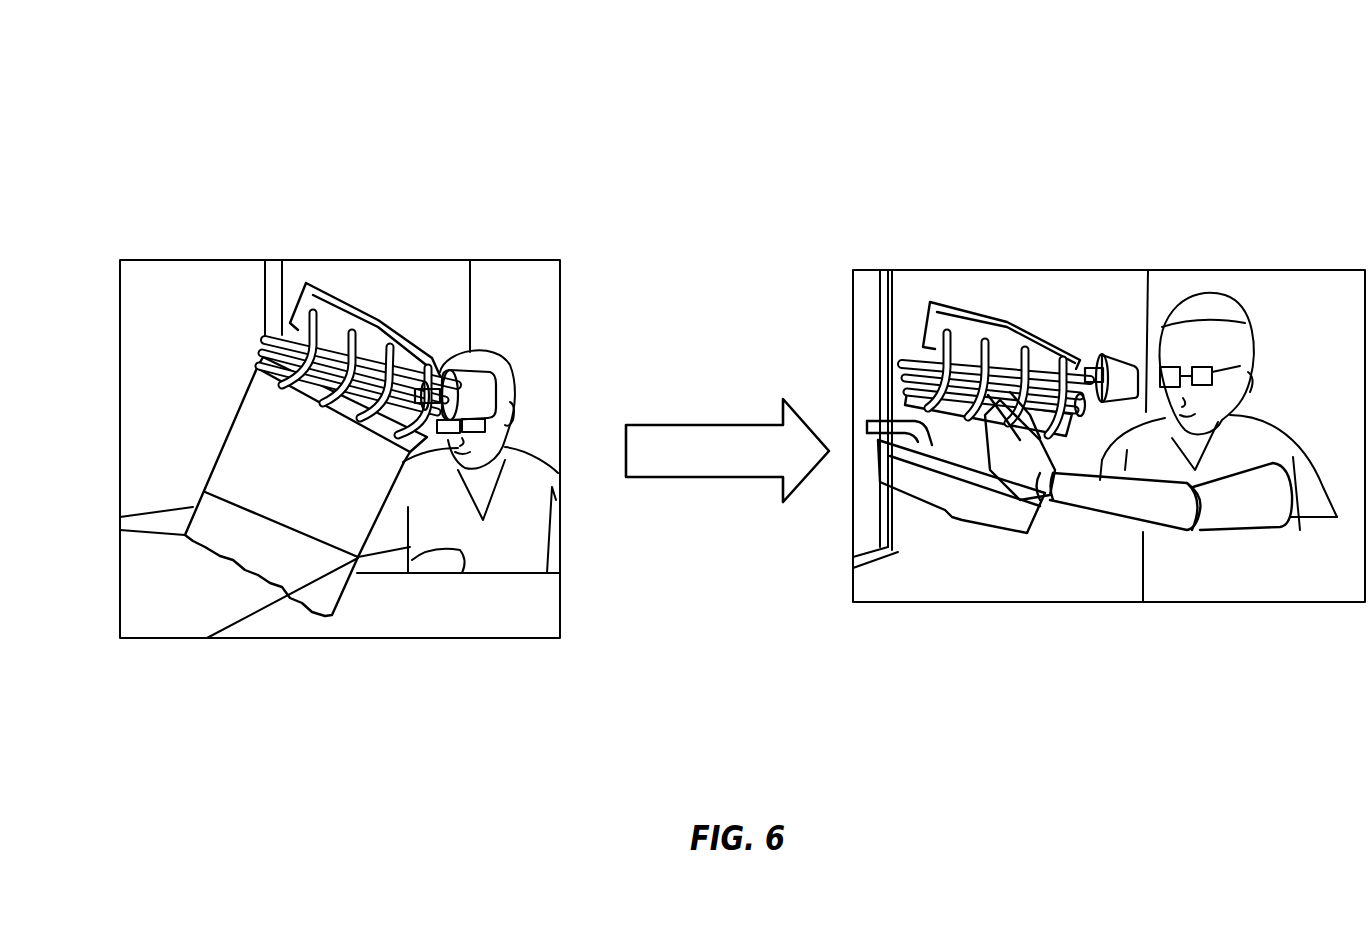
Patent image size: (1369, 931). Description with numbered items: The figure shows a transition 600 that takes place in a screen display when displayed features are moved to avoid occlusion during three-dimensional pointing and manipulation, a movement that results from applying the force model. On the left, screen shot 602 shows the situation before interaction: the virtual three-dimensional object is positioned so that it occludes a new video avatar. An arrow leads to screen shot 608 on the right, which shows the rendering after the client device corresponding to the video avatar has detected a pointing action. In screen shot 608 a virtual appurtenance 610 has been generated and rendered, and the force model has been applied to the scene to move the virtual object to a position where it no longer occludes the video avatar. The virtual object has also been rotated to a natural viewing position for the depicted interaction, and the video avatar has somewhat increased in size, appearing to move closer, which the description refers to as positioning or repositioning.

The transition 600 is at (1078, 92).
The screen shot 602 is at (397, 259).
The screen shot 608 is at (1273, 602).
The virtual appurtenance 610 is at (1082, 517).